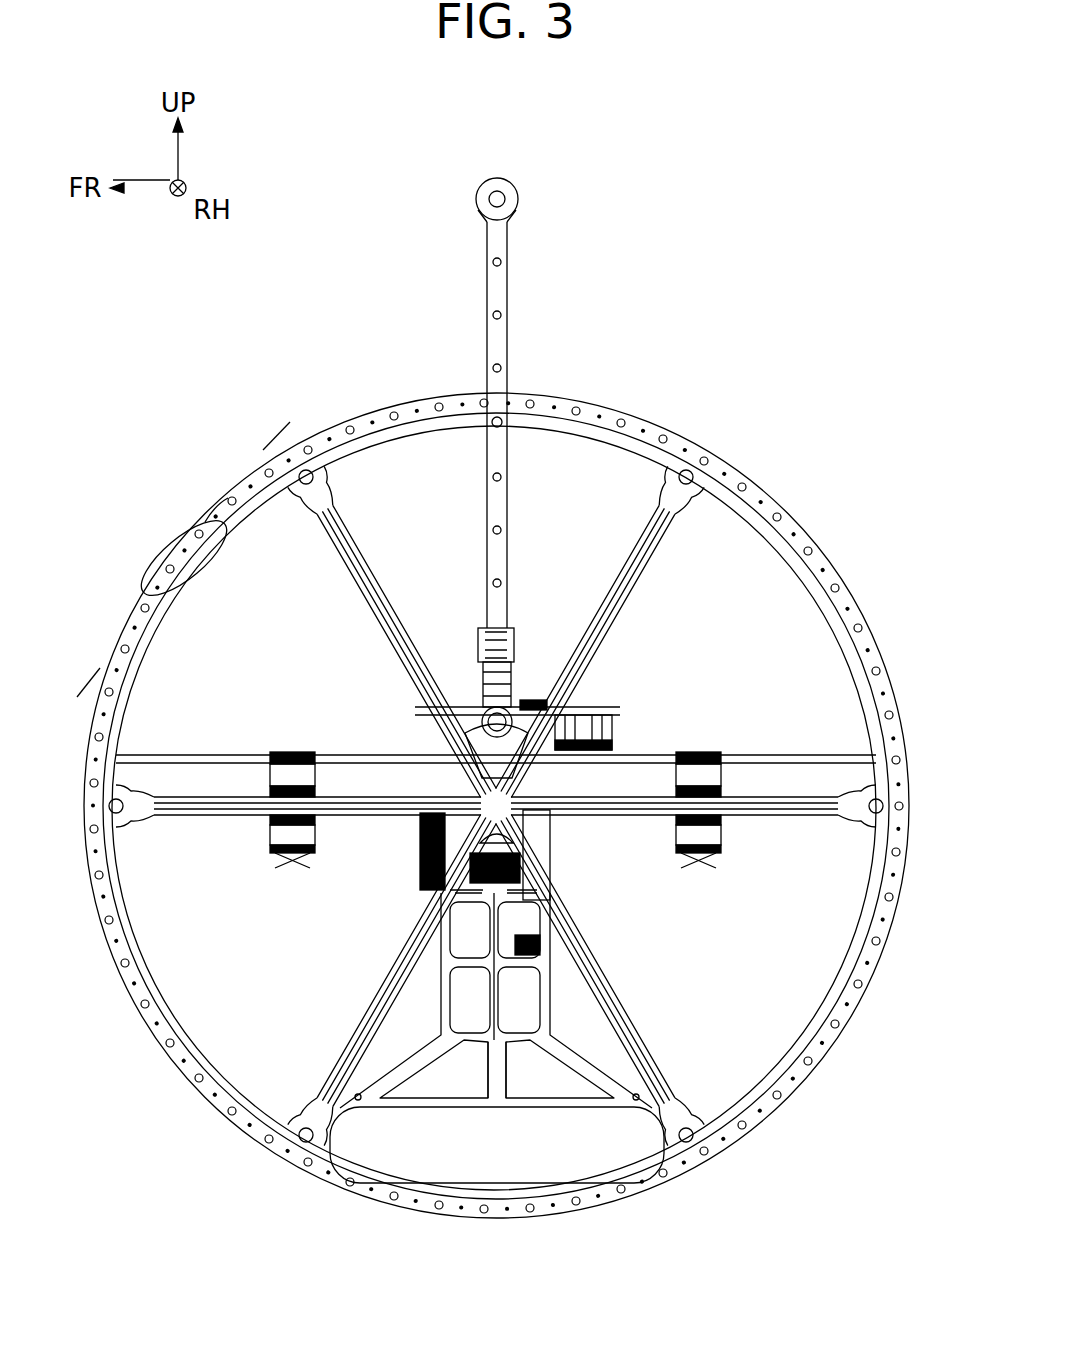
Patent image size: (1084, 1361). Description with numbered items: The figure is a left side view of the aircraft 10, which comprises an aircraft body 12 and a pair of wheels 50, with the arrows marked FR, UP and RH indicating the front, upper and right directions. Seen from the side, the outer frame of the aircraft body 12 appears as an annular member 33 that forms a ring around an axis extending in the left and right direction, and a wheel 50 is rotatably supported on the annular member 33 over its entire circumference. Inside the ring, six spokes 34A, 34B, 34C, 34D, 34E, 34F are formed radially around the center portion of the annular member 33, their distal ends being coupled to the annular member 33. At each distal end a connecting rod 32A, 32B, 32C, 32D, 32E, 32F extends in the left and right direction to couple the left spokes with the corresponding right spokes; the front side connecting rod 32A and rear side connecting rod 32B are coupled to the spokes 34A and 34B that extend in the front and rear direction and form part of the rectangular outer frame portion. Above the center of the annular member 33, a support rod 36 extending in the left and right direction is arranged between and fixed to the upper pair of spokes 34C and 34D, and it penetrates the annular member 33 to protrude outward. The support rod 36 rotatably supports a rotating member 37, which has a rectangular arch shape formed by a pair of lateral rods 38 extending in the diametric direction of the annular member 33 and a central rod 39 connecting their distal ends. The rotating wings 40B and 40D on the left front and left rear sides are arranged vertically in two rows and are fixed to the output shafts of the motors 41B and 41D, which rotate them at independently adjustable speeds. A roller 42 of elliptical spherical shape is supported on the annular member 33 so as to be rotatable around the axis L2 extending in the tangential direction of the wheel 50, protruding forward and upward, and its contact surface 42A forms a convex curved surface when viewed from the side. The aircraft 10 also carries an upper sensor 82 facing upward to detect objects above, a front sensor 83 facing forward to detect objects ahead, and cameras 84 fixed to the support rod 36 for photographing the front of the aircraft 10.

The aircraft 10 is at (650, 287).
The aircraft body 12 is at (702, 662).
The annular member 33 is at (394, 436).
The front side connecting rod 32A is at (113, 818).
The rear side connecting rod 32B is at (897, 792).
The connecting rod 32C is at (305, 467).
The connecting rod 32D is at (700, 470).
The connecting rod 32E is at (300, 1150).
The connecting rod 32F is at (700, 1148).
The spoke 34A is at (232, 816).
The spoke 34B is at (834, 822).
The spoke 34C is at (383, 585).
The spoke 34D is at (660, 548).
The spoke 34E is at (345, 1056).
The spoke 34F is at (660, 1052).
The support rod 36 is at (475, 724).
The rotating member 37 is at (510, 306).
The lateral rod 38 is at (509, 256).
The central rod 39 is at (507, 184).
The rotating wing 40B is at (215, 748).
The rotating wing 40D is at (780, 750).
The motor 41B is at (320, 772).
The motor 41D is at (725, 772).
The roller 42 is at (163, 527).
The contact surface 42A is at (143, 590).
The wheel 50 is at (220, 513).
The axis L2 is at (258, 432).
The upper sensor 82 is at (615, 718).
The front sensor 83 is at (500, 918).
The camera 84 is at (511, 630).